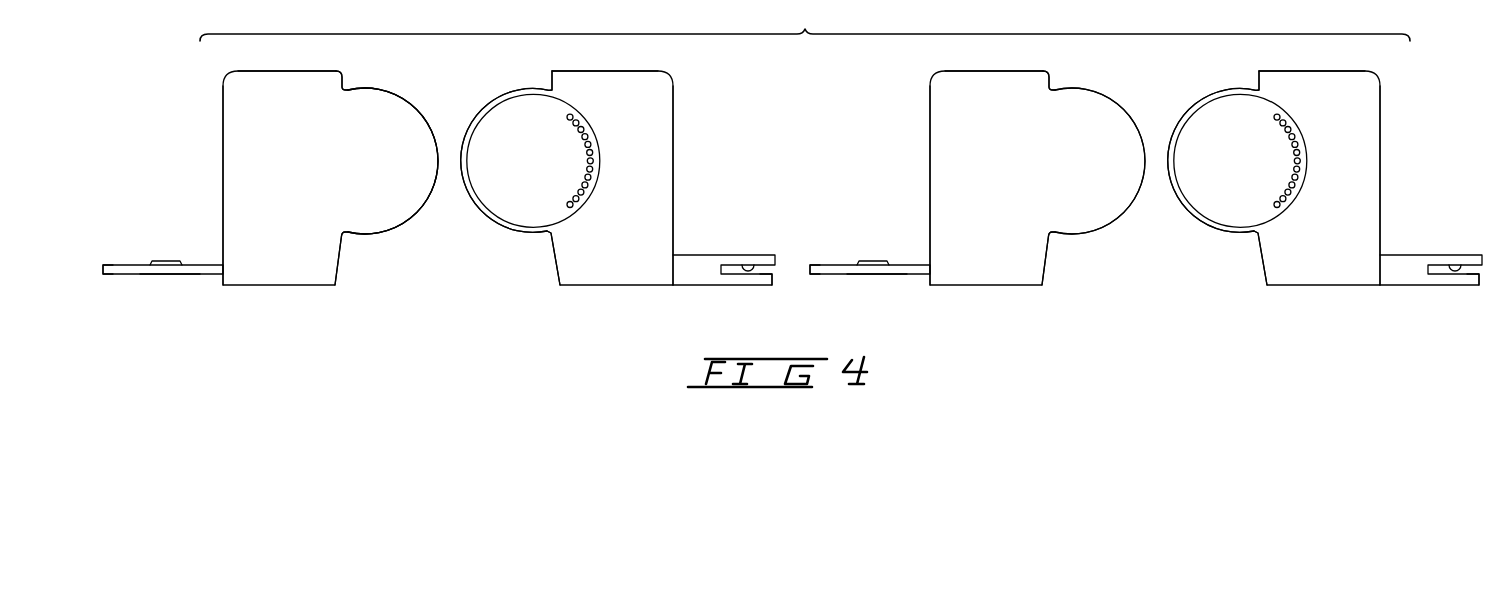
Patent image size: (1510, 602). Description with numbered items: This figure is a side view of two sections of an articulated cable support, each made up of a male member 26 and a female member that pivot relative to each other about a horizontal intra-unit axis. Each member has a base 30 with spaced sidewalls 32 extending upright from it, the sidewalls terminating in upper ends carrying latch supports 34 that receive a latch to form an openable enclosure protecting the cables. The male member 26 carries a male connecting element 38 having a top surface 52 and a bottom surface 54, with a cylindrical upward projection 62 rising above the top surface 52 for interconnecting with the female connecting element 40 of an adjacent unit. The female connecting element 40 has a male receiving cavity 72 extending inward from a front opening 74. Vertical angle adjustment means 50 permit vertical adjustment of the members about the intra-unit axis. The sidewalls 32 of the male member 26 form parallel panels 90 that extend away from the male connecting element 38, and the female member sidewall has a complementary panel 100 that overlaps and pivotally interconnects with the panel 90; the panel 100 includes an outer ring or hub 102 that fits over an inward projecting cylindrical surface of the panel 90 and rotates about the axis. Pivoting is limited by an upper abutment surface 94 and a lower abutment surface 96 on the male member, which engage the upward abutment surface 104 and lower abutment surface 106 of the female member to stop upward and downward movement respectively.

The male member 26 is at (393, 117).
The base 30 is at (288, 286).
The sidewalls 32 is at (226, 152).
The latch supports 34 is at (288, 71).
The male connecting element 38 is at (113, 275).
The female connecting element 40 is at (687, 283).
The vertical angle adjustment means 50 is at (572, 144).
The top surface 52 is at (138, 263).
The bottom surface 54 is at (155, 275).
The cylindrical upward projection 62 is at (165, 261).
The male receiving cavity 72 is at (762, 265).
The front opening 74 is at (772, 272).
The panels 90 is at (418, 143).
The upper abutment surface 94 is at (342, 86).
The lower abutment surface 96 is at (343, 260).
The complementary panel 100 is at (485, 193).
The outer ring or hub 102 is at (495, 233).
The upward abutment surface 104 is at (552, 82).
The lower abutment surface 106 is at (555, 263).